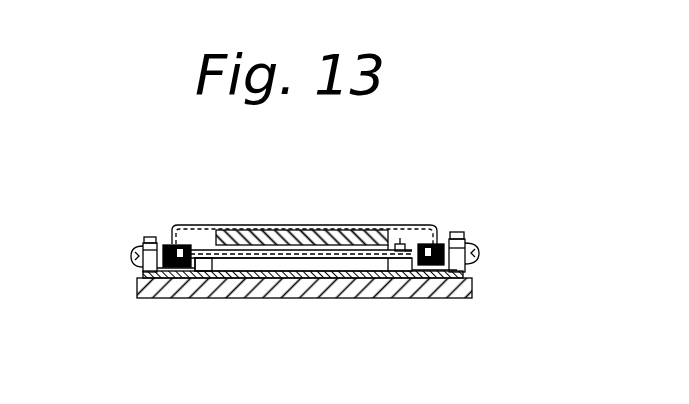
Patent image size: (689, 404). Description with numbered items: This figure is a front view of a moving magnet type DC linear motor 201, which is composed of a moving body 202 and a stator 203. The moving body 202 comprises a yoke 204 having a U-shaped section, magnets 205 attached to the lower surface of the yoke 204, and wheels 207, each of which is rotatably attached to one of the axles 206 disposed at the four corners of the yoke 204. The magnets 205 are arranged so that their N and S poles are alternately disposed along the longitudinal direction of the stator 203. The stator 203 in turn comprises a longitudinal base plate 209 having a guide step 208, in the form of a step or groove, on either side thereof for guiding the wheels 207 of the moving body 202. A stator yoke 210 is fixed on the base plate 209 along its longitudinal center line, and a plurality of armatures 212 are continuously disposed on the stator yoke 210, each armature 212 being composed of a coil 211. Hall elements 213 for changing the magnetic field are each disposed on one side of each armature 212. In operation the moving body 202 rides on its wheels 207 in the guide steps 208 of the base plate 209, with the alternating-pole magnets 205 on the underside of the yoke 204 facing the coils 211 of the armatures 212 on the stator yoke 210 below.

The moving magnet type DC linear motor 201 is at (524, 206).
The moving body 202 is at (207, 224).
The stator 203 is at (414, 284).
The yoke 204 is at (320, 230).
The magnets 205 is at (268, 238).
The axles 206 is at (167, 238).
The wheels 207 is at (150, 236).
The guide step 208 is at (132, 264).
The base plate 209 is at (357, 276).
The stator yoke 210 is at (309, 271).
The coil 211 is at (265, 262).
The armatures 212 is at (207, 268).
The hall elements 213 is at (400, 241).